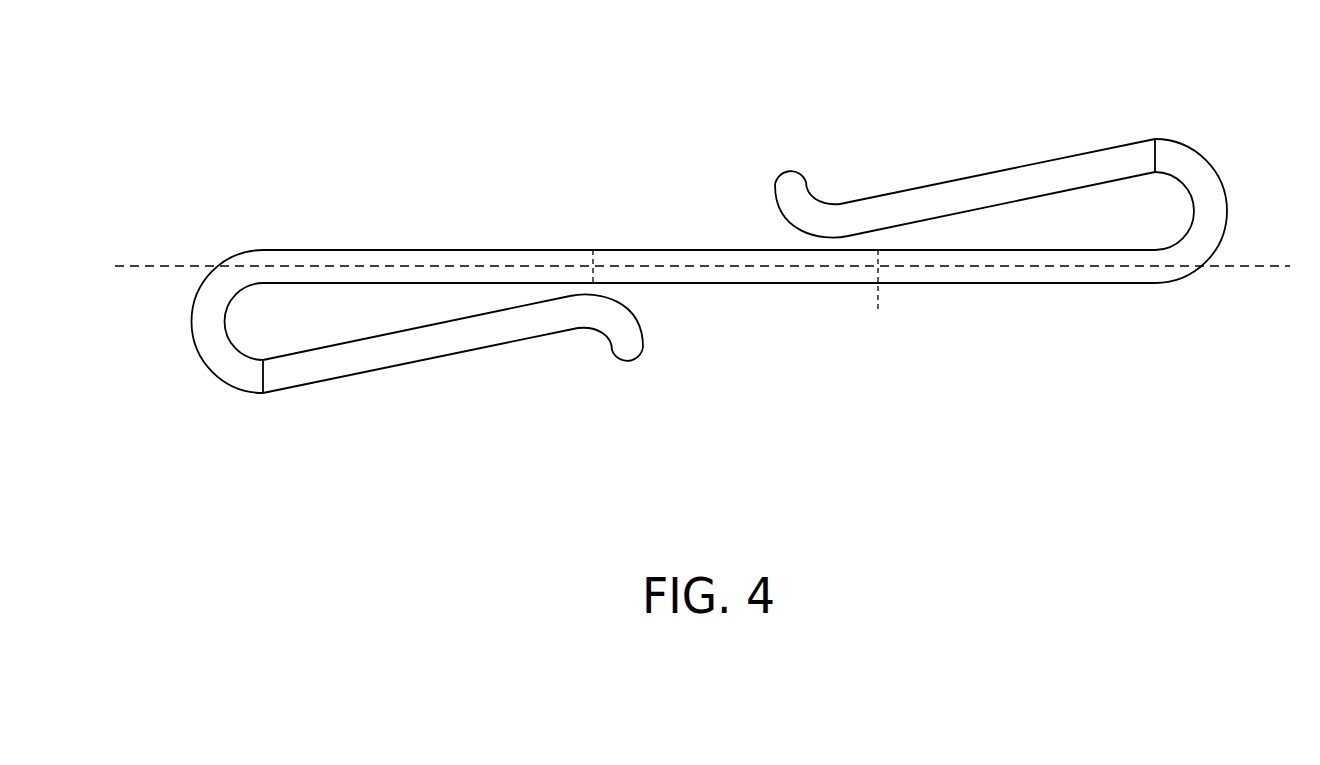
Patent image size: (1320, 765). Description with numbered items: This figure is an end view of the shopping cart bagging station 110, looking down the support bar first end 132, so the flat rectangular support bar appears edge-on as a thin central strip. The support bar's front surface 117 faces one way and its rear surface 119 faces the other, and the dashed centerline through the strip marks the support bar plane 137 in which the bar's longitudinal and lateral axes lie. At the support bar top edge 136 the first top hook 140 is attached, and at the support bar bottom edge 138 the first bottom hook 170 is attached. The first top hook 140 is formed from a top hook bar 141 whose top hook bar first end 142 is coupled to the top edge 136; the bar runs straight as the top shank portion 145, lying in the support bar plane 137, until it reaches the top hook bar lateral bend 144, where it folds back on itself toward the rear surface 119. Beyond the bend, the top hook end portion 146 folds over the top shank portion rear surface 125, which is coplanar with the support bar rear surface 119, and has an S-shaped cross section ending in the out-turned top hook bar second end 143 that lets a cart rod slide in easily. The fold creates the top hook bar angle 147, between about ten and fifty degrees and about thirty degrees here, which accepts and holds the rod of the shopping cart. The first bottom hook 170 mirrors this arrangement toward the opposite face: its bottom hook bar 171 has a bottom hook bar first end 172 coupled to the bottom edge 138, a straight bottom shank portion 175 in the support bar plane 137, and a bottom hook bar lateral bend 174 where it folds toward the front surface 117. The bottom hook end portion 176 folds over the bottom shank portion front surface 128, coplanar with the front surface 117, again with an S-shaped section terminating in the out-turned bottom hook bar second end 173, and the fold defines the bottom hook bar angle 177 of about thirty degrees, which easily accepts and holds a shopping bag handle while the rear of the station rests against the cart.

The shopping cart bagging station 110 is at (498, 78).
The support bar front surface 117 is at (763, 283).
The support bar rear surface 119 is at (741, 250).
The top shank portion rear surface 125 is at (1047, 249).
The bottom shank portion front surface 128 is at (432, 285).
The support bar first end 132 is at (706, 263).
The support bar top edge 136 is at (877, 268).
The support bar plane 137 is at (1265, 268).
The support bar bottom edge 138 is at (596, 267).
The first top hook 140 is at (1237, 168).
The top hook bar 141 is at (938, 160).
The top hook bar first end 142 is at (883, 272).
The top hook bar second end 143 is at (790, 172).
The top hook bar lateral bend 144 is at (1210, 213).
The top shank portion 145 is at (1105, 285).
The top hook end portion 146 is at (1008, 176).
The top hook bar angle 147 is at (1157, 188).
The first bottom hook 170 is at (170, 378).
The bottom hook bar 171 is at (345, 425).
The bottom hook bar first end 172 is at (585, 260).
The bottom hook bar second end 173 is at (630, 355).
The bottom hook bar lateral bend 174 is at (207, 332).
The bottom shank portion 175 is at (380, 250).
The bottom hook end portion 176 is at (508, 332).
The bottom hook bar angle 177 is at (255, 302).